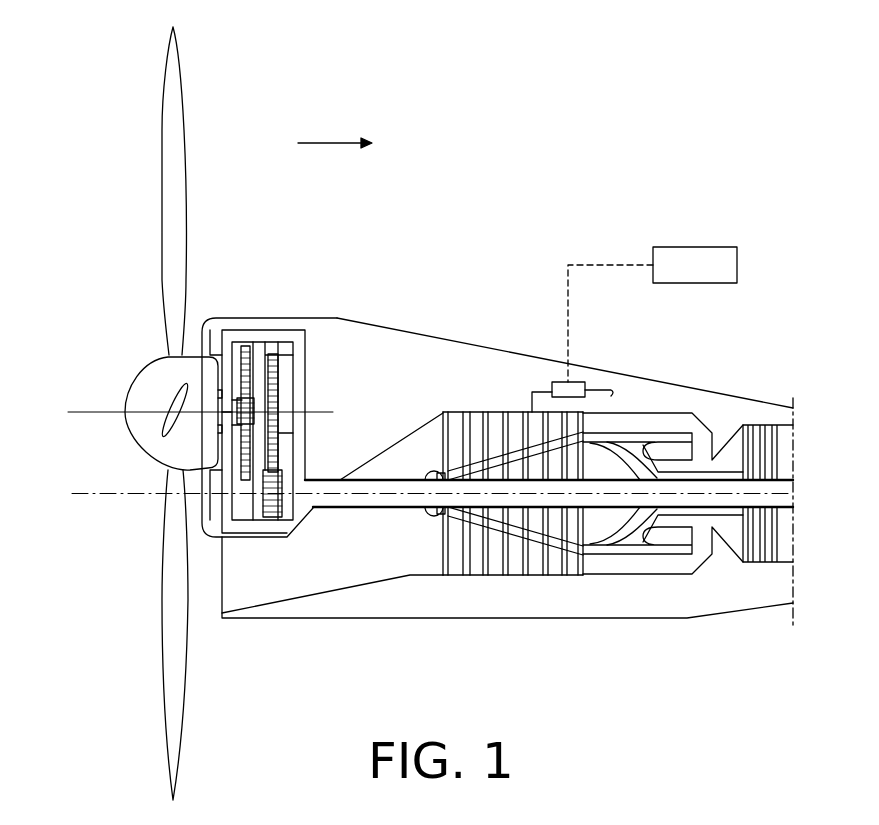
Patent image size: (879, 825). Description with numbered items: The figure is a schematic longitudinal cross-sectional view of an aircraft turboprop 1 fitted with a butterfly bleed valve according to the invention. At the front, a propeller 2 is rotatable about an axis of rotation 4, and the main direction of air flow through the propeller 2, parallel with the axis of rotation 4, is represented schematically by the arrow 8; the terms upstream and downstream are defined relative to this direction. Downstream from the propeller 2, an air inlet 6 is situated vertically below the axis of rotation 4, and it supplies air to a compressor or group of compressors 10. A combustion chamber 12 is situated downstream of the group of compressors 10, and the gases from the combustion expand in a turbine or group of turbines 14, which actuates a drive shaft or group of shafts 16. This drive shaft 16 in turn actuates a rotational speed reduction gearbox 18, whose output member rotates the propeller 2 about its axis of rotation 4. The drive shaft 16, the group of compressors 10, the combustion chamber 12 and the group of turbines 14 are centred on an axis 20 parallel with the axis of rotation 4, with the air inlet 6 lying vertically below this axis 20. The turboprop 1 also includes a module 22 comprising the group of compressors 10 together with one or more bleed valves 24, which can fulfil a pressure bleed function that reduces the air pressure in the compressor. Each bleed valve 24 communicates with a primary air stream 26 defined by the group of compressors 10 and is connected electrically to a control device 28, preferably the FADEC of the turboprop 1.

The aircraft turboprop 1 is at (470, 222).
The propeller 2 is at (118, 306).
The axis of rotation 4 is at (90, 412).
The air inlet 6 is at (237, 588).
The arrow 8 is at (337, 142).
The group of compressors 10 is at (513, 420).
The combustion chamber 12 is at (673, 445).
The group of turbines 14 is at (772, 432).
The drive shaft 16 is at (371, 498).
The rotational speed reduction gearbox 18 is at (245, 342).
The axis 20 is at (88, 497).
The module 22 is at (476, 338).
The bleed valve 24 is at (582, 376).
The primary air stream 26 is at (450, 443).
The control device 28 is at (702, 263).